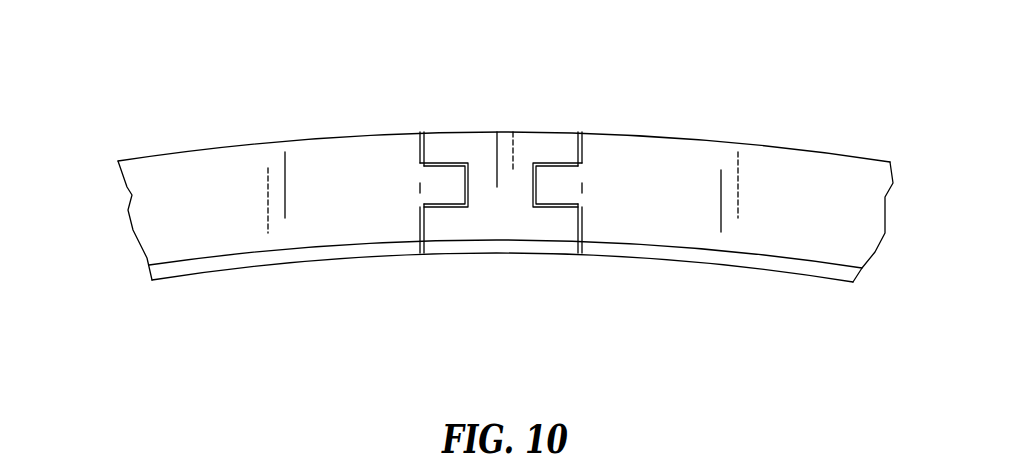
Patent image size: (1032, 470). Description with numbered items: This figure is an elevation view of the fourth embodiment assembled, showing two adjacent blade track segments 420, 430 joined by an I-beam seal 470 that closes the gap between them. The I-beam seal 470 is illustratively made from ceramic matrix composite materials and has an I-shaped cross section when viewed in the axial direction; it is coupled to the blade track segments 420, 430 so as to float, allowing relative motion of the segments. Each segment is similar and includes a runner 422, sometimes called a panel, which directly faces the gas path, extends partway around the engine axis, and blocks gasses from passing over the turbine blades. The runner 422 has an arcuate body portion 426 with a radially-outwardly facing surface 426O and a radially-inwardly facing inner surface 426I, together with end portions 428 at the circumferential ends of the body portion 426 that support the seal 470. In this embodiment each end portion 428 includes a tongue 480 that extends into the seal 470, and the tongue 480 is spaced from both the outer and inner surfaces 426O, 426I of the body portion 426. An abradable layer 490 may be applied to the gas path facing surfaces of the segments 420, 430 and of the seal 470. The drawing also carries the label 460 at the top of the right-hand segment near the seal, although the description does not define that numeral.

The blade track segment 420 is at (135, 131).
The blade track segment 430 is at (868, 124).
The runner 422 is at (208, 146).
The body portion 426 is at (197, 291).
The radially-outwardly facing surface 426O is at (268, 143).
The inner surface 426I is at (303, 247).
The end portion 428 is at (403, 220).
The joint 460 is at (720, 140).
The I-beam seal 470 is at (537, 114).
The tongue 480 is at (449, 216).
The abradable layer 490 is at (499, 268).